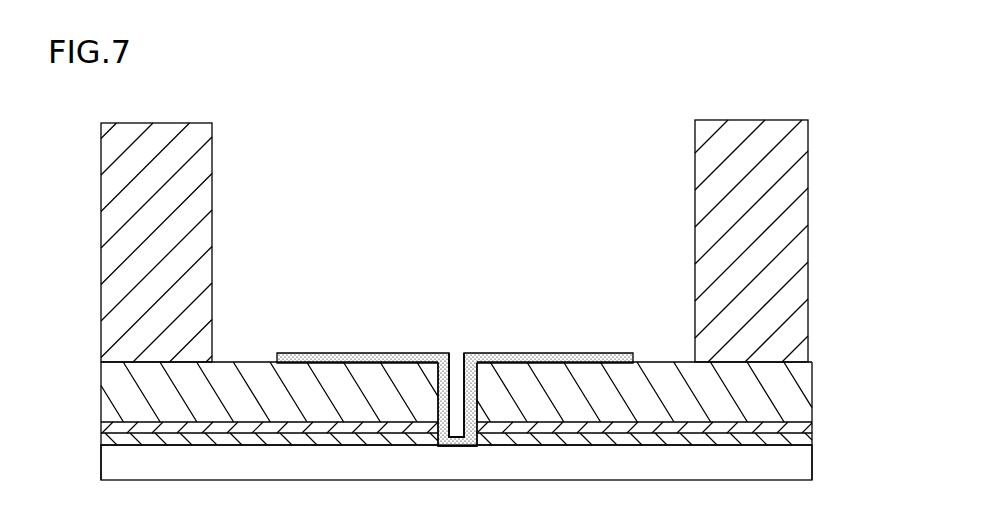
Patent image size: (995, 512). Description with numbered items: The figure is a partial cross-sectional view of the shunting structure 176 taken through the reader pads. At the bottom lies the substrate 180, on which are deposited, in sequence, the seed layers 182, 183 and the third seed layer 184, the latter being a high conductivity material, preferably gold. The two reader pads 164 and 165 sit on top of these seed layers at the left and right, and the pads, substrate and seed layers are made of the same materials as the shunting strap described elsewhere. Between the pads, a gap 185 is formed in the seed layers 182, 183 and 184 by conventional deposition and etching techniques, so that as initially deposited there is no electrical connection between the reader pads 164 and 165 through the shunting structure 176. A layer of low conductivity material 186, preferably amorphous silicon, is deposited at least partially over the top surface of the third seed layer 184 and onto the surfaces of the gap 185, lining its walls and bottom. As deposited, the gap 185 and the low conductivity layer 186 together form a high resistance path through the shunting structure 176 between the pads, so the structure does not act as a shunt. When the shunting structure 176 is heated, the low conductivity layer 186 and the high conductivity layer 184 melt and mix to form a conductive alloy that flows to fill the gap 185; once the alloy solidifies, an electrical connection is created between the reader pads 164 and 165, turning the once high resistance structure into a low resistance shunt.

The reader pad 164 is at (193, 142).
The reader pad 165 is at (708, 132).
The shunting structure 176 is at (461, 305).
The gap 185 is at (457, 350).
The layer of low conductivity material 186 is at (350, 353).
The third seed layer 184 is at (806, 375).
The seed layer 183 is at (807, 427).
The seed layer 182 is at (807, 438).
The substrate 180 is at (807, 452).